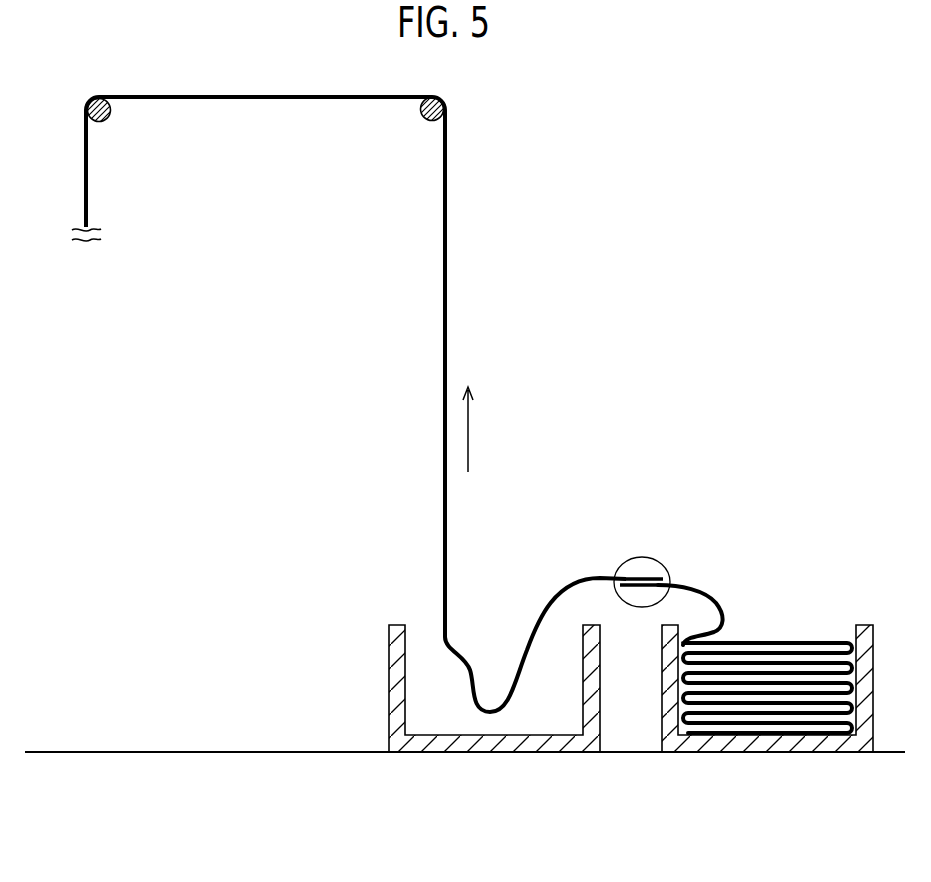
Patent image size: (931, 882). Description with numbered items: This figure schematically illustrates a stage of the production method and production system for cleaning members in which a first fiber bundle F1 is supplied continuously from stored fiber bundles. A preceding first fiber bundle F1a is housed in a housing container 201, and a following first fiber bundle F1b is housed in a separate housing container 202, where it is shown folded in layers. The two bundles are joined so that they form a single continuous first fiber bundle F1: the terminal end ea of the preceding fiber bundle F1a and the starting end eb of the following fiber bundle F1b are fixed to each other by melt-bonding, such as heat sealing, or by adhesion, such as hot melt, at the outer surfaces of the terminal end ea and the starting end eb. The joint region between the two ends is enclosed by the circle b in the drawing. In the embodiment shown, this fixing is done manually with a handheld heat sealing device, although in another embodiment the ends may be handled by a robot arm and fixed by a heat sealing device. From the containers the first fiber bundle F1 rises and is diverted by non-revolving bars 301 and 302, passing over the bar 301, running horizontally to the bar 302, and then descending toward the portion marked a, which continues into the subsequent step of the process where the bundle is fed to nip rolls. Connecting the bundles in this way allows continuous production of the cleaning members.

The non-revolving bar 301 is at (438, 96).
The non-revolving bar 302 is at (108, 118).
The first fiber bundle F1 is at (446, 340).
The preceding first fiber bundle F1a is at (563, 578).
The following first fiber bundle F1b is at (725, 599).
The terminal end ea is at (634, 576).
The starting end eb is at (636, 588).
The splice (joint) portion b is at (647, 565).
The portion of the fiber bundle continued to the next step a is at (86, 246).
The housing container 201 is at (472, 745).
The housing container 202 is at (763, 745).